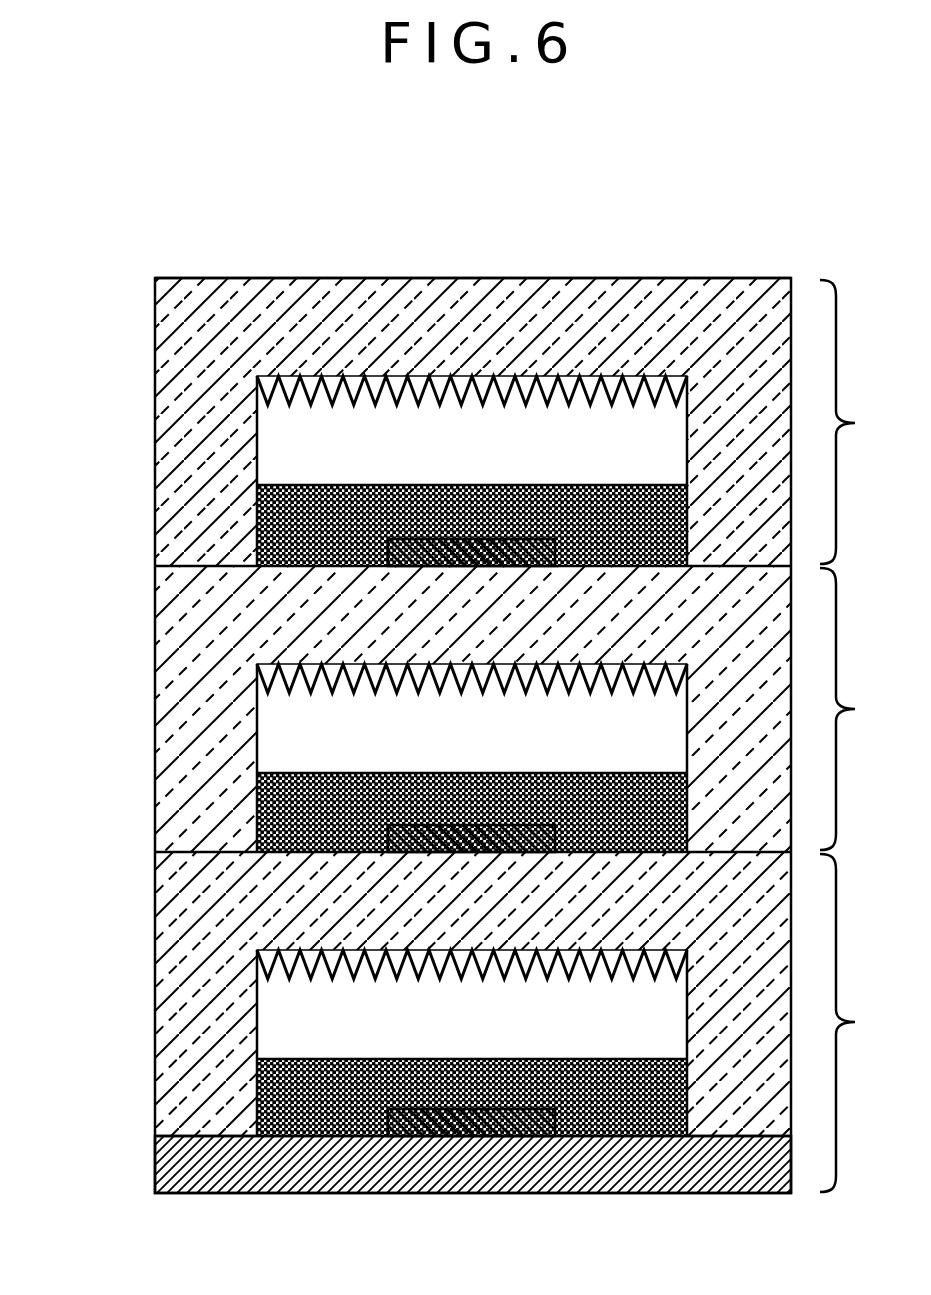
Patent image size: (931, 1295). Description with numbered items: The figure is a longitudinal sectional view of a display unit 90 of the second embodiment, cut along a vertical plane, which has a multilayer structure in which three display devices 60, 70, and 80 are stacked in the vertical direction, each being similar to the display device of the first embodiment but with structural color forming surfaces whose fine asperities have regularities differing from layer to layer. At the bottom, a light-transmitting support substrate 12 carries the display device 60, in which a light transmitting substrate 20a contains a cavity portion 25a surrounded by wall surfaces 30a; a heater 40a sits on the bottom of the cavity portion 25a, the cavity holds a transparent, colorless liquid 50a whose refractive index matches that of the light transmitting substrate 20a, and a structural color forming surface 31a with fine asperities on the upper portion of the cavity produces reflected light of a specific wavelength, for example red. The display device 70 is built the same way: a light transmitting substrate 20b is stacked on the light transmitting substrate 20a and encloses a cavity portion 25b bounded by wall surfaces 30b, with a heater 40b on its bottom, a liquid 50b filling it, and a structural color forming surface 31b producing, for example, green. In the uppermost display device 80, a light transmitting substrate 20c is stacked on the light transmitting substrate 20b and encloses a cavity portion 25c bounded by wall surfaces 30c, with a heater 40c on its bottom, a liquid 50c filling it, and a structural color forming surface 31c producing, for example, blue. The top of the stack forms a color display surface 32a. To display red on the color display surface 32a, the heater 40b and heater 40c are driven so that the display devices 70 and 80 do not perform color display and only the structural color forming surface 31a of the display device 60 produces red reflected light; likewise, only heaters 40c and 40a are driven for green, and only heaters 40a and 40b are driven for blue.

The display unit 90 is at (600, 229).
The color display surface 32a is at (360, 279).
The display device 80 is at (530, 423).
The display device 70 is at (531, 710).
The display device 60 is at (531, 1023).
The support substrate 12 is at (160, 1168).
The light transmitting substrate 20c is at (170, 339).
The structural color forming surface 31c is at (300, 408).
The wall surfaces 30c is at (257, 440).
The cavity portion 25c is at (283, 461).
The heater 40c is at (388, 558).
The liquid 50c is at (272, 546).
The light transmitting substrate 20b is at (170, 627).
The structural color forming surface 31b is at (300, 696).
The wall surfaces 30b is at (257, 728).
The cavity portion 25b is at (283, 749).
The heater 40b is at (388, 846).
The liquid 50b is at (272, 834).
The light transmitting substrate 20a is at (170, 907).
The structural color forming surface 31a is at (300, 982).
The wall surfaces 30a is at (257, 1014).
The cavity portion 25a is at (283, 1033).
The heater 40a is at (388, 1128).
The liquid 50a is at (272, 1118).